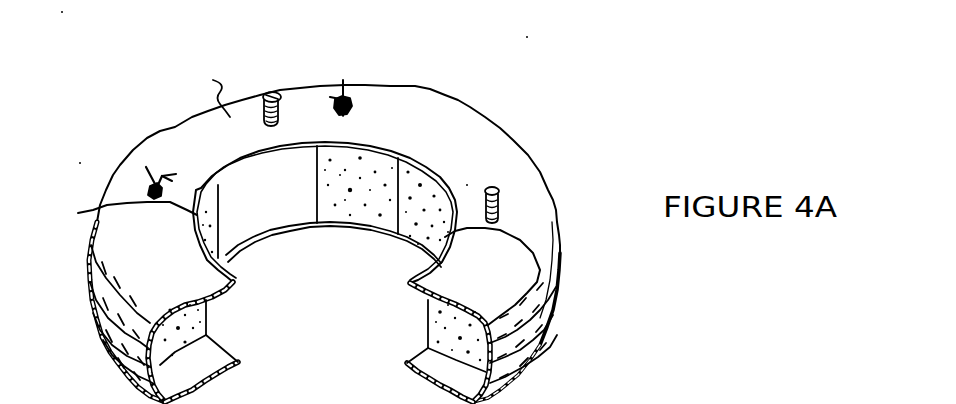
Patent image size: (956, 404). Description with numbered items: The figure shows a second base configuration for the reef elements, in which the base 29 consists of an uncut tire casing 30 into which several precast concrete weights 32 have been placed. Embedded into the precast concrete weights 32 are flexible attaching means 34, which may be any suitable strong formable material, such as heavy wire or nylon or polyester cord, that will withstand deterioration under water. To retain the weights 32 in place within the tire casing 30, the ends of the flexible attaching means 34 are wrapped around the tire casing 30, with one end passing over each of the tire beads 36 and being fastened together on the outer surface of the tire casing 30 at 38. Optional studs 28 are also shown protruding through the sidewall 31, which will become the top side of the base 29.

The studs 28 is at (494, 215).
The base 29 is at (560, 158).
The tire casing 30 is at (324, 241).
The sidewall 31 is at (208, 84).
The precast concrete weights 32 is at (325, 213).
The flexible attaching means 34 is at (336, 232).
The tire beads 36 is at (350, 237).
The fastening location on outer surface 38 is at (78, 213).